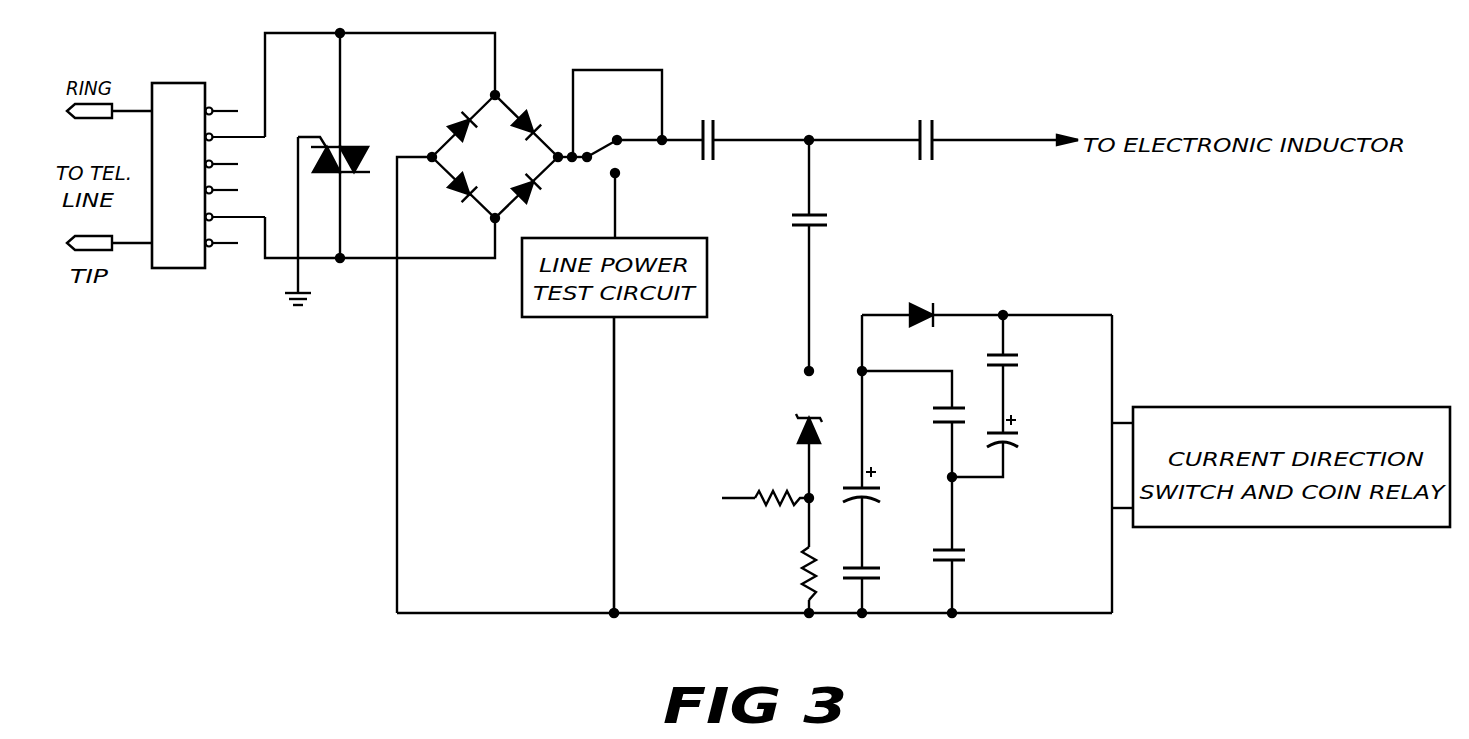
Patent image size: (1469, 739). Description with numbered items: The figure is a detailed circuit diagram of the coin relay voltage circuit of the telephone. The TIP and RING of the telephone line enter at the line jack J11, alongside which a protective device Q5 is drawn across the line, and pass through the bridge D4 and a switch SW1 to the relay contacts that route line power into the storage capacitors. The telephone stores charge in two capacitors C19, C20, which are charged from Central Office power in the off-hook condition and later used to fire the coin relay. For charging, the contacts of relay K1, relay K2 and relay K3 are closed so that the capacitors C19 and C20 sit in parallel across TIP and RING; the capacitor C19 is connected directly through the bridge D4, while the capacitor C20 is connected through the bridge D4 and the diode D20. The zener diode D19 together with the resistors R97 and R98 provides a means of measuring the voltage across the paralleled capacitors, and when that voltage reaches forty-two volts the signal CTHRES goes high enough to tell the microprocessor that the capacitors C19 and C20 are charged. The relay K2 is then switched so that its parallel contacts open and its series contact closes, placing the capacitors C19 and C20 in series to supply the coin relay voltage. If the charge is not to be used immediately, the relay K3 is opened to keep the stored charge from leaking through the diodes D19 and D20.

The RJ11C telephone line jack J11 is at (204, 179).
The QDIS triac Q5 is at (322, 169).
The bridge D4 is at (470, 334).
The switch SW1 is at (630, 154).
The relay K1 is at (739, 127).
The relay K2 is at (895, 356).
The relay K3 is at (948, 466).
The zener diode D19 is at (777, 432).
The diode D20 is at (987, 291).
The resistor R98 is at (718, 500).
The resistor R97 is at (781, 557).
The capacitor C19 is at (884, 441).
The capacitor C20 is at (1009, 446).